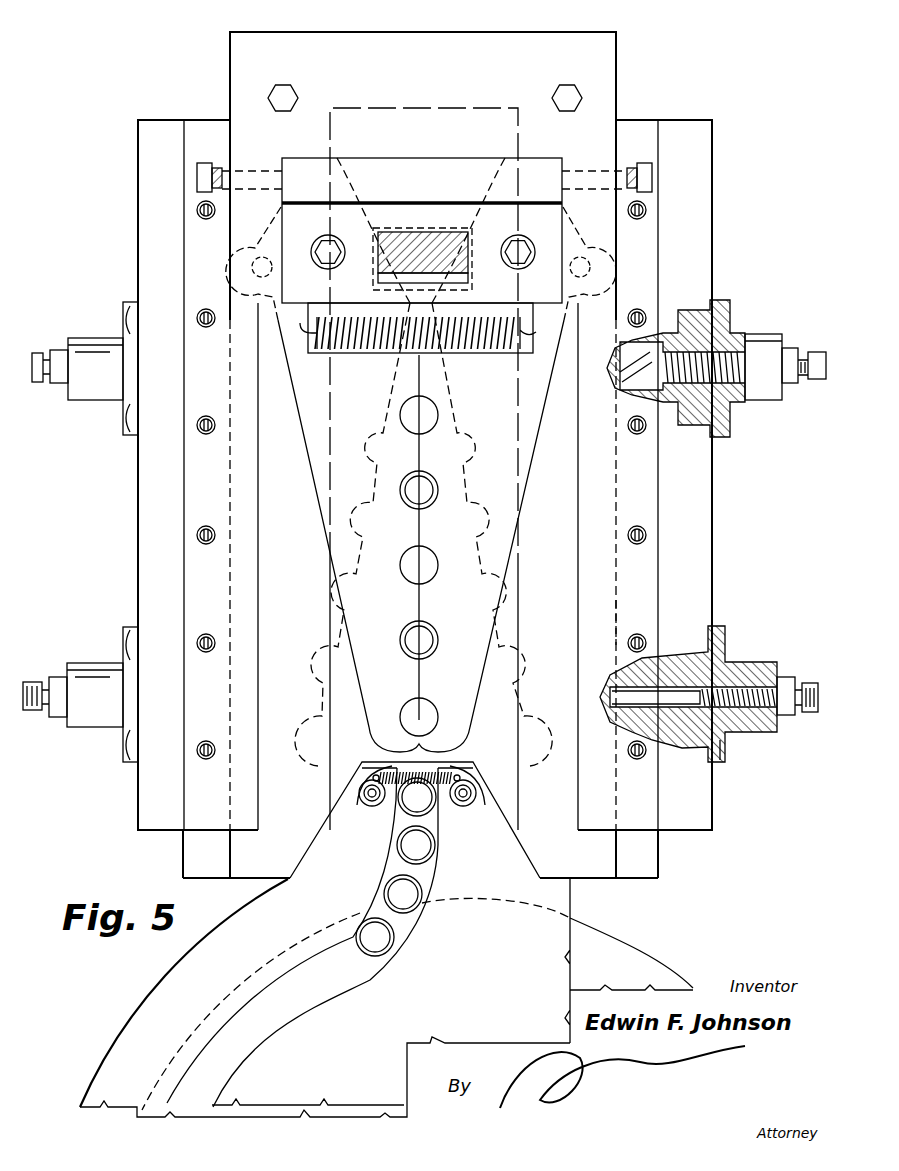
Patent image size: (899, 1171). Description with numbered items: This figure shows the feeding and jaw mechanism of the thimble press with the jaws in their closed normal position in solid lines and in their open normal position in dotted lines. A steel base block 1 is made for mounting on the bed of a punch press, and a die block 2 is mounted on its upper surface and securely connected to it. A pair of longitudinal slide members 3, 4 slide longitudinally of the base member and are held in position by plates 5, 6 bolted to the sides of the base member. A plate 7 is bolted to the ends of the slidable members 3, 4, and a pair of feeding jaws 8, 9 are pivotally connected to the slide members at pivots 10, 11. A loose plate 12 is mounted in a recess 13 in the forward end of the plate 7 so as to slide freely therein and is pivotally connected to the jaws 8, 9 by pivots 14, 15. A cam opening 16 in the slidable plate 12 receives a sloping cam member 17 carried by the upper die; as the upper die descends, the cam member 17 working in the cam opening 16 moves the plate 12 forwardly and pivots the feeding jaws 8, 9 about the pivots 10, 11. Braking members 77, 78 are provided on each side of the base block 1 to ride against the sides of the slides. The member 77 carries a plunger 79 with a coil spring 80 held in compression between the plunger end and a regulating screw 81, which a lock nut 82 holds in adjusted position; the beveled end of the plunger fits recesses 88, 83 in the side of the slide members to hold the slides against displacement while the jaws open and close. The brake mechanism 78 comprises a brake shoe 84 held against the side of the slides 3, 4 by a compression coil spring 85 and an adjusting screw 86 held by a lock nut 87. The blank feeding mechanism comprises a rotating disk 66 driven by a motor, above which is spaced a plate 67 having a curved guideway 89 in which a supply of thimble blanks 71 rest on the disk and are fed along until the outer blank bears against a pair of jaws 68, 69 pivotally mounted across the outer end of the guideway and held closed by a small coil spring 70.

The base block 1 is at (703, 490).
The die block 2 is at (357, 748).
The longitudinal slide member 3 is at (294, 566).
The longitudinal slide member 4 is at (548, 566).
The plate 5 is at (198, 475).
The plate 6 is at (645, 475).
The plate 7 is at (424, 76).
The feeding jaw 8 is at (366, 462).
The feeding jaw 9 is at (492, 462).
The pivot 10 is at (263, 256).
The pivot 11 is at (588, 252).
The loose plate 12 is at (424, 334).
The recess 13 is at (424, 203).
The pivot 14 is at (323, 241).
The pivot 15 is at (526, 245).
The cam opening 16 is at (466, 282).
The sloping cam member 17 is at (396, 241).
The rotating disk 66 is at (641, 951).
The plate 67 is at (325, 997).
The jaw 68 is at (367, 806).
The jaw 69 is at (463, 806).
The small coil spring 70 is at (456, 766).
The blanks 71 is at (398, 930).
The braking member 77 is at (746, 662).
The braking member 78 is at (757, 334).
The plunger 79 is at (662, 750).
The coil spring 80 is at (731, 660).
The regulating screw 81 is at (810, 683).
The lock nut 82 is at (787, 677).
The recess 83 is at (617, 616).
The brake shoe 84 is at (642, 340).
The compression coil spring 85 is at (716, 340).
The adjusting screw 86 is at (817, 352).
The lock nut 87 is at (790, 348).
The recess 88 is at (603, 706).
The guideway 89 is at (440, 875).